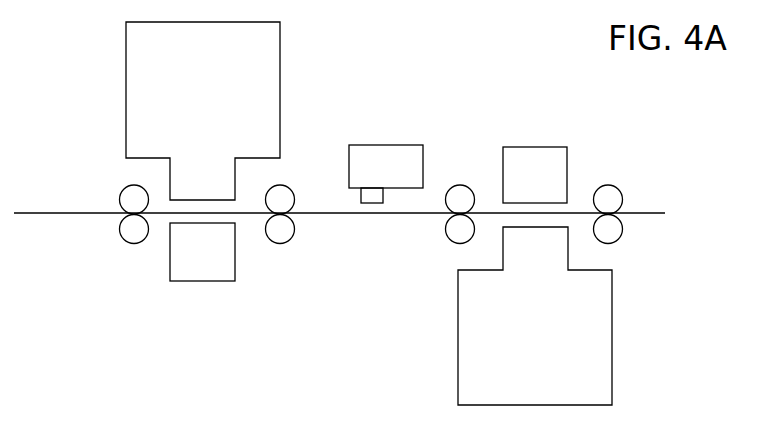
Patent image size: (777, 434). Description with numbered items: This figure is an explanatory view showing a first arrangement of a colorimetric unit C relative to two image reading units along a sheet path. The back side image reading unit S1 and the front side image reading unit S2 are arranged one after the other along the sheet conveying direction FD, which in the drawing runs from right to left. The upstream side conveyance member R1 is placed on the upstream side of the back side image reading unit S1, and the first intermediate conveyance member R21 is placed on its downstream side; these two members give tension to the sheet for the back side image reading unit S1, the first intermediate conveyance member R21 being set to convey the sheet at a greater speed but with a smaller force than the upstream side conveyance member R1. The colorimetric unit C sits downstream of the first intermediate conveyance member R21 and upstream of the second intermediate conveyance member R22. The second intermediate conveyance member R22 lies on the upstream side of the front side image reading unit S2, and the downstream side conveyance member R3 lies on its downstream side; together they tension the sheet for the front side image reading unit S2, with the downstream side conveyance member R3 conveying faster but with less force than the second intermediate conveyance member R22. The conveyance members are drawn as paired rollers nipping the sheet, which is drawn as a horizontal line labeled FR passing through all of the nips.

The film roll / web FR is at (50, 212).
The front side image reading unit S2 is at (280, 40).
The downstream side conveyance member R3 is at (122, 237).
The second intermediate conveyance member R22 is at (295, 193).
The colorimetric unit C is at (408, 145).
The sheet conveying direction FD is at (395, 251).
The first intermediate conveyance member R21 is at (462, 185).
The back side image reading unit S1 is at (612, 314).
The upstream side conveyance member R1 is at (610, 185).